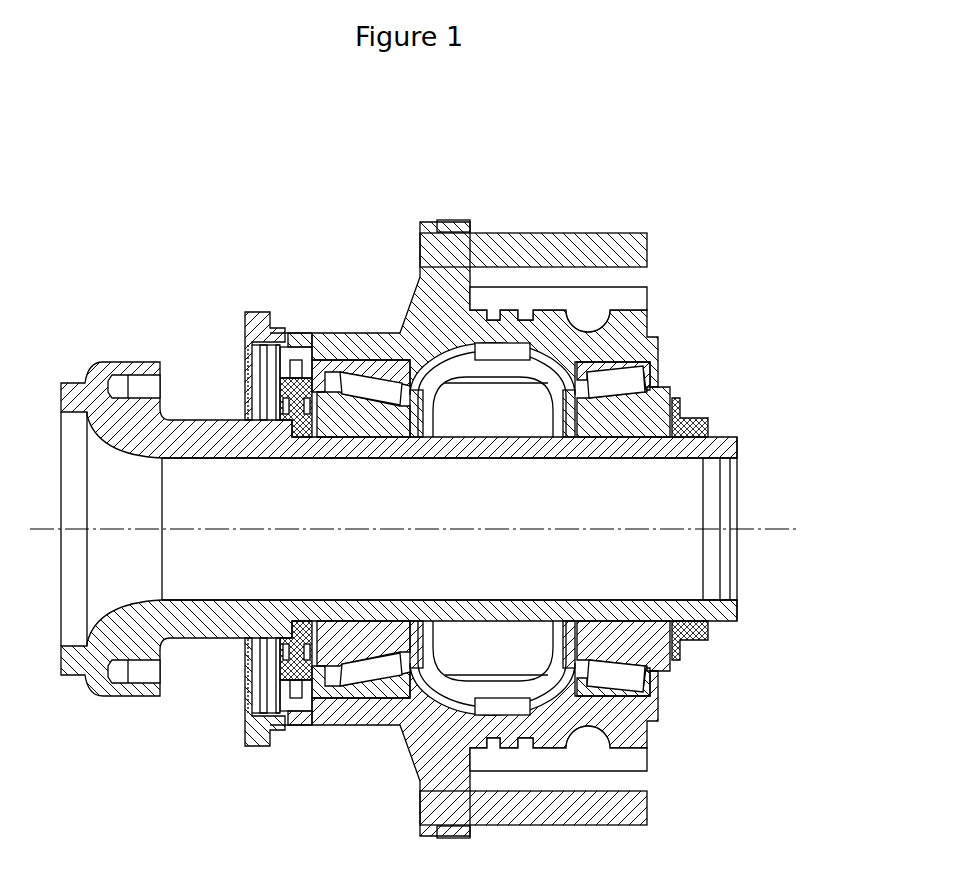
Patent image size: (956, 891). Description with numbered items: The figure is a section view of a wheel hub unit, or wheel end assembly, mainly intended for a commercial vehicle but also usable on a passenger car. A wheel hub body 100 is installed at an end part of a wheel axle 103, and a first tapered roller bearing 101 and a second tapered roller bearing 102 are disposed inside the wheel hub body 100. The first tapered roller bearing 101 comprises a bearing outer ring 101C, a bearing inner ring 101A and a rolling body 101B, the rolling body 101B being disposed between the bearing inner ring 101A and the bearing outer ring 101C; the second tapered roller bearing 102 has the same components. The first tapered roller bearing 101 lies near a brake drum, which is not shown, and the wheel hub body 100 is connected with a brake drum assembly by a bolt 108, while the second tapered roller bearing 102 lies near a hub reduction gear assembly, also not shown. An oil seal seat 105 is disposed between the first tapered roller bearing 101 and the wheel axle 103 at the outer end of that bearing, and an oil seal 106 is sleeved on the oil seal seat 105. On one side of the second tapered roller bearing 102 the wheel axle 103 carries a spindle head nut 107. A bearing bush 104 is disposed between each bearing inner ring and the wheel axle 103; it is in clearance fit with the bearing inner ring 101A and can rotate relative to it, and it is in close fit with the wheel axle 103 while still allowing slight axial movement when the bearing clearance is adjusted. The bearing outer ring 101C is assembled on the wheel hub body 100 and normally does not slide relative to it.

The wheel hub body 100 is at (637, 357).
The first tapered roller bearing 101 is at (351, 548).
The bearing inner ring 101A is at (342, 693).
The rolling body 101B is at (356, 693).
The bearing outer ring 101C is at (385, 695).
The second tapered roller bearing 102 is at (680, 383).
The wheel axle 103 is at (200, 618).
The bearing bush 104 is at (350, 460).
The oil seal seat 105 is at (283, 405).
The oil seal 106 is at (247, 342).
The spindle head nut 107 is at (703, 640).
The bolt 108 is at (629, 245).